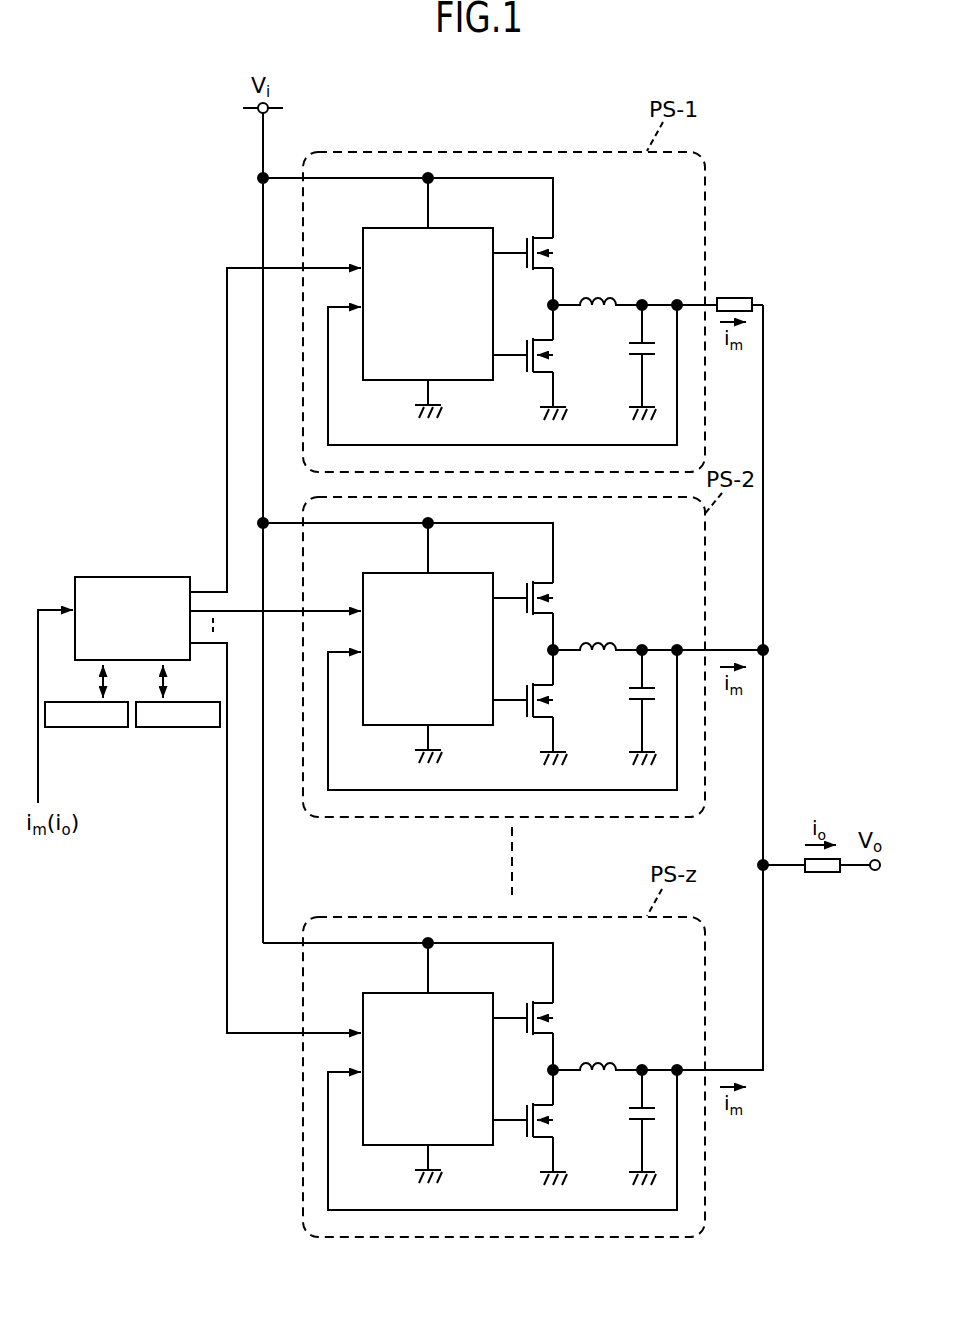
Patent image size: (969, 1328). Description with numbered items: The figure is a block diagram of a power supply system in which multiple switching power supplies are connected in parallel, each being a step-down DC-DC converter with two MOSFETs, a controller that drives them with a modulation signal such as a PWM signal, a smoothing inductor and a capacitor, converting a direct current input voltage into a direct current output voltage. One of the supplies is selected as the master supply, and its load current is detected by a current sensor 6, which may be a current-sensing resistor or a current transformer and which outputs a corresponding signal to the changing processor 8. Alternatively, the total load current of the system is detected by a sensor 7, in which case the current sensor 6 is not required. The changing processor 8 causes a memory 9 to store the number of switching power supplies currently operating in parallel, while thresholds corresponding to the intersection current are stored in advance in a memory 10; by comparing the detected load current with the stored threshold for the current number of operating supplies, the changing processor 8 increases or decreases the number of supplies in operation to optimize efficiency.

The current sensor 6 is at (742, 297).
The current sensor 7 is at (829, 873).
The changing processor 8 is at (148, 577).
The memory 9 is at (93, 727).
The memory 10 is at (156, 727).